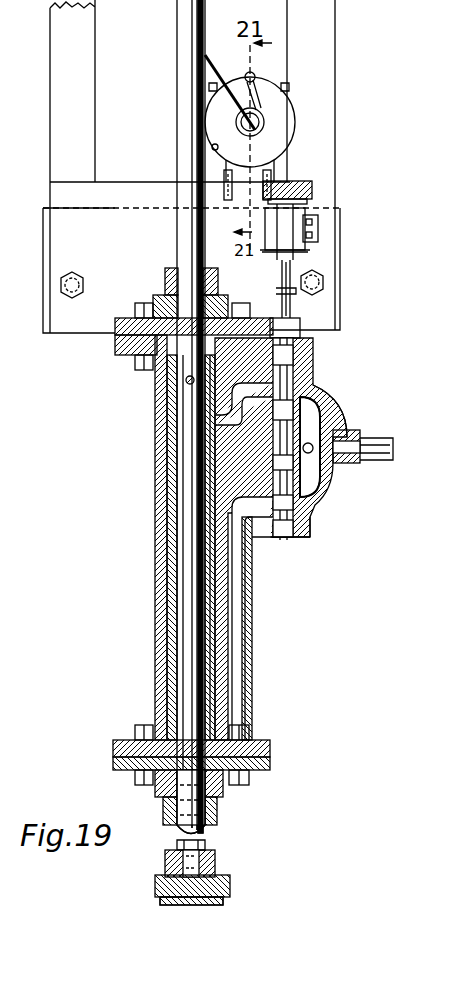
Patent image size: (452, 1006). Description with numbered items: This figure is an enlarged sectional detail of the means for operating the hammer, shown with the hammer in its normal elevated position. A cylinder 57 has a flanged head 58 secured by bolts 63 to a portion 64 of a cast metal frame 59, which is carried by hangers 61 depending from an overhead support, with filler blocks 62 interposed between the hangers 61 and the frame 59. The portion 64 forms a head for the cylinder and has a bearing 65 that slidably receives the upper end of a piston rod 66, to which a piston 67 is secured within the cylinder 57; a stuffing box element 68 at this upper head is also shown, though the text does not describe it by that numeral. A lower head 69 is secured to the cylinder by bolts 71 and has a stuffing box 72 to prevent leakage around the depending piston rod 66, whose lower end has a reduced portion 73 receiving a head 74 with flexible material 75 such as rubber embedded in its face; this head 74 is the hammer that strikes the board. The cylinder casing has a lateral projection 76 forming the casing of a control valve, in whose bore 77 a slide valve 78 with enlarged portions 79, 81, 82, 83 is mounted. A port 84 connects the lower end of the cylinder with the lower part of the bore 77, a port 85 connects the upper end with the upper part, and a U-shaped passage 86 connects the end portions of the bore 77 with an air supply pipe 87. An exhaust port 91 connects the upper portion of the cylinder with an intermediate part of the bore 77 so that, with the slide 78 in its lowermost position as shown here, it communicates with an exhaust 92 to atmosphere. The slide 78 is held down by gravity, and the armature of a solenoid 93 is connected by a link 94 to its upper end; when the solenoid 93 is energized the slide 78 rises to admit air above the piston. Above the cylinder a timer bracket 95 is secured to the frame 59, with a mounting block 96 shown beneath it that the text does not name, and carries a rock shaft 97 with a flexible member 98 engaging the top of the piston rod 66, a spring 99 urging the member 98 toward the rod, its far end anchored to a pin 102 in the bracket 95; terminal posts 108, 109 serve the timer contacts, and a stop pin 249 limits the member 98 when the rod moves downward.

The cylinder 57 is at (155, 618).
The flanged head 58 is at (120, 356).
The frame 59 is at (212, 147).
The hangers 61 is at (95, 88).
The filler blocks 62 is at (340, 212).
The bolts 63 is at (142, 372).
The portion of the frame 64 is at (122, 304).
The bearing 65 is at (118, 332).
The piston rod 66 is at (180, 505).
The piston 67 is at (166, 440).
The gland cap 68 is at (172, 300).
The head 69 is at (270, 770).
The bolts 71 is at (140, 786).
The stuffing box 72 is at (218, 815).
The reduced portion 73 is at (215, 868).
The head 74 is at (156, 880).
The flexible material 75 is at (172, 906).
The lateral projection 76 is at (312, 536).
The bore 77 is at (312, 345).
The slide valve 78 is at (284, 545).
The enlarged portion 79 is at (312, 372).
The enlarged portion 81 is at (322, 420).
The enlarged portion 82 is at (318, 490).
The enlarged portion 83 is at (292, 540).
The port 84 is at (250, 692).
The port 85 is at (190, 385).
The U-shaped passage 86 is at (340, 428).
The air supply pipe 87 is at (385, 462).
The exhaust port 91 is at (236, 400).
The exhaust 92 is at (313, 452).
The solenoid 93 is at (318, 234).
The link 94 is at (300, 322).
The bracket 95 is at (283, 122).
The block 96 is at (310, 182).
The rock shaft 97 is at (236, 122).
The flexible member 98 is at (230, 50).
The spring 99 is at (258, 98).
The pin 102 is at (263, 64).
The terminal post 108 is at (209, 88).
The terminal post 109 is at (289, 87).
The stop pin 249 is at (133, 196).